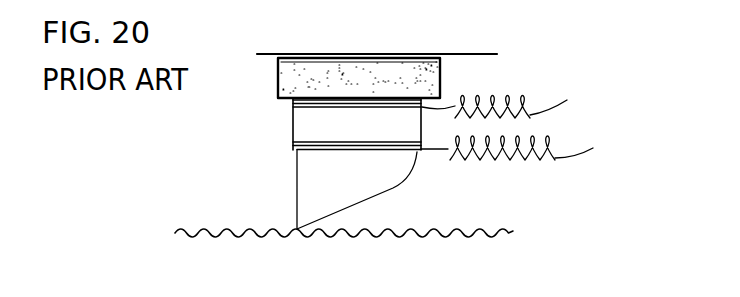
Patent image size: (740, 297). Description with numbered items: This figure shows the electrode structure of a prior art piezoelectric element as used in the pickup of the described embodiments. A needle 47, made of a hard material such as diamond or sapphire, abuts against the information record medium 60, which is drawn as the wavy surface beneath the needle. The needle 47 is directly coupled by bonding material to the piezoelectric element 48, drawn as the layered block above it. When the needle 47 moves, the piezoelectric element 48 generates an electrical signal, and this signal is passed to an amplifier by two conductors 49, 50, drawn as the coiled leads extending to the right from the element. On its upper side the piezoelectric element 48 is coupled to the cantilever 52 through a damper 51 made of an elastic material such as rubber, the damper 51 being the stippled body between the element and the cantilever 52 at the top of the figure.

The needle 47 is at (412, 158).
The piezoelectric element 48 is at (307, 127).
The conductor 49 is at (596, 150).
The conductor 50 is at (558, 74).
The damper 51 is at (432, 78).
The cantilever 52 is at (267, 42).
The information record medium 60 is at (500, 227).